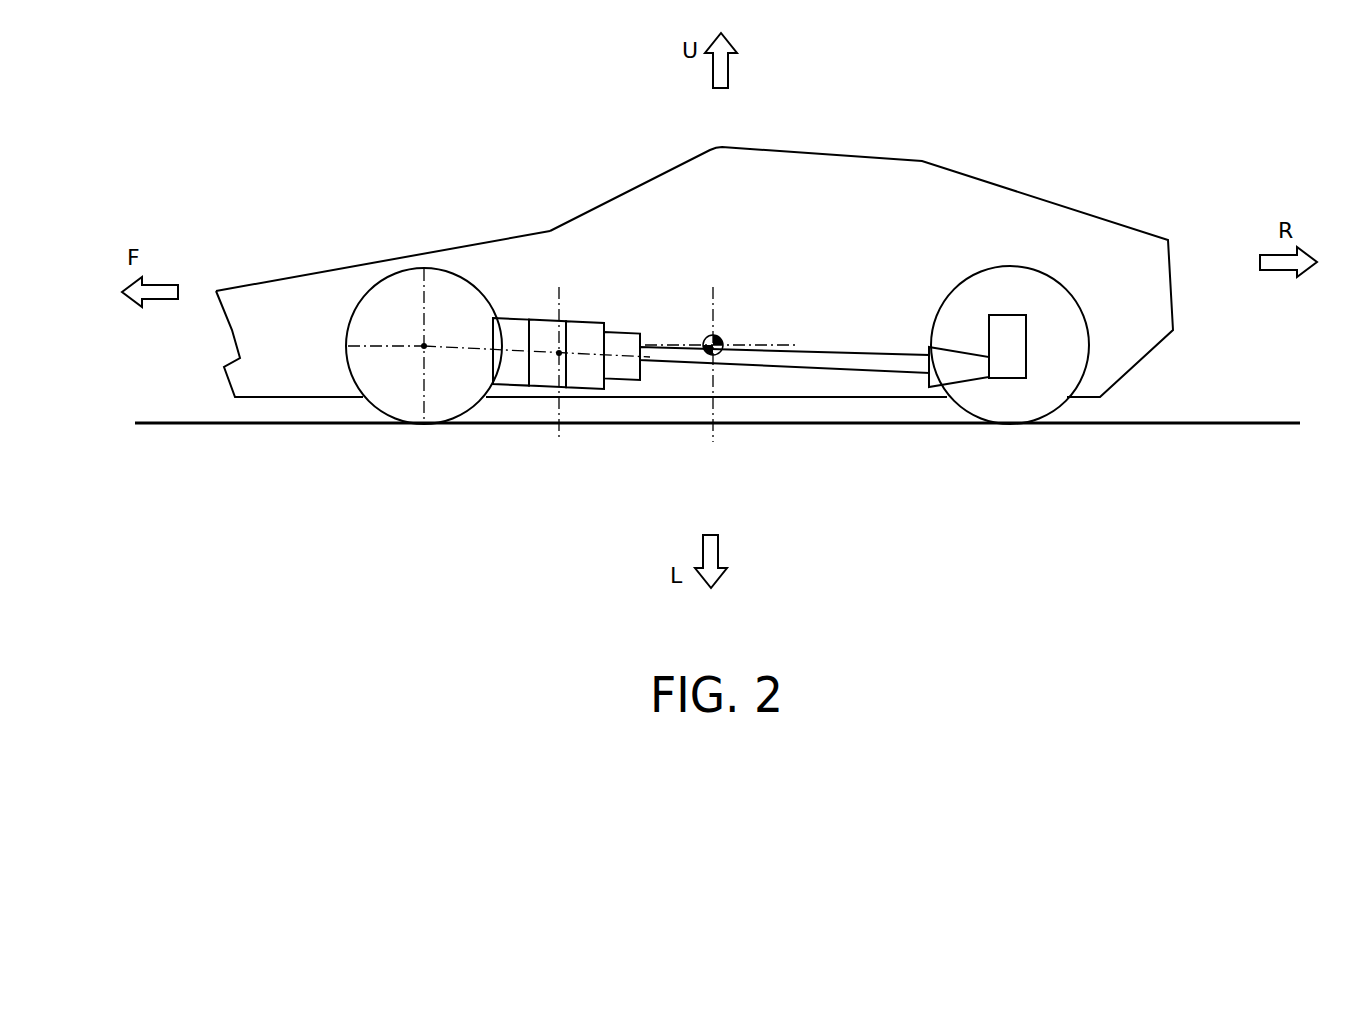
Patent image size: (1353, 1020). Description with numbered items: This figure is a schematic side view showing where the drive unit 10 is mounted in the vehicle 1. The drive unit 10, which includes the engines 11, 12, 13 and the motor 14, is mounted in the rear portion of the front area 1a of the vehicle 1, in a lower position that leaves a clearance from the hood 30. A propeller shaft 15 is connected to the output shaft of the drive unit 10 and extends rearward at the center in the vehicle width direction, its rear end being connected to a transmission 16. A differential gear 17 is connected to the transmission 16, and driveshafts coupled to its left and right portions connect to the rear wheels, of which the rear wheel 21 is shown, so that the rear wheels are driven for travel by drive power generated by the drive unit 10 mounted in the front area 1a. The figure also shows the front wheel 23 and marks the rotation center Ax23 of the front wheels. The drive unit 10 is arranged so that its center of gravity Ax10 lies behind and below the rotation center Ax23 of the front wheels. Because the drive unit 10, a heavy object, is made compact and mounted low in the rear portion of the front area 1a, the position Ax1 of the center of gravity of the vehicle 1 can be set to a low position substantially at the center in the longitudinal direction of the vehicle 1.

The vehicle 1 is at (694, 220).
The front area 1a is at (316, 287).
The hood 30 is at (400, 257).
The drive unit 10 is at (568, 428).
The engine 11 is at (505, 377).
The engine 12 is at (542, 372).
The engine 13 is at (580, 378).
The motor 14 is at (618, 372).
The propeller shaft 15 is at (873, 360).
The transmission 16 is at (953, 367).
The differential gear 17 is at (1008, 358).
The rear wheel 21 is at (1037, 392).
The front wheel 23 is at (392, 396).
The position of center of gravity of the vehicle Ax1 is at (701, 335).
The center of gravity of the drive unit Ax10 is at (551, 345).
The rotation center of the front wheels Ax23 is at (435, 356).